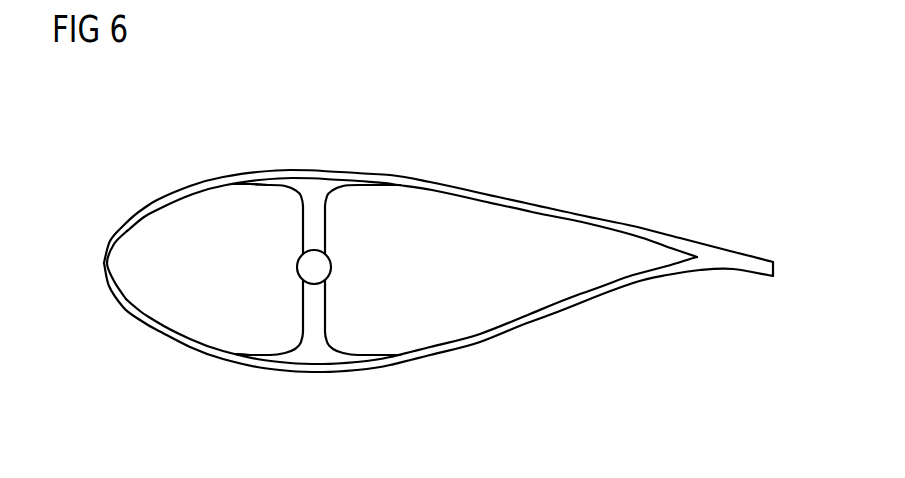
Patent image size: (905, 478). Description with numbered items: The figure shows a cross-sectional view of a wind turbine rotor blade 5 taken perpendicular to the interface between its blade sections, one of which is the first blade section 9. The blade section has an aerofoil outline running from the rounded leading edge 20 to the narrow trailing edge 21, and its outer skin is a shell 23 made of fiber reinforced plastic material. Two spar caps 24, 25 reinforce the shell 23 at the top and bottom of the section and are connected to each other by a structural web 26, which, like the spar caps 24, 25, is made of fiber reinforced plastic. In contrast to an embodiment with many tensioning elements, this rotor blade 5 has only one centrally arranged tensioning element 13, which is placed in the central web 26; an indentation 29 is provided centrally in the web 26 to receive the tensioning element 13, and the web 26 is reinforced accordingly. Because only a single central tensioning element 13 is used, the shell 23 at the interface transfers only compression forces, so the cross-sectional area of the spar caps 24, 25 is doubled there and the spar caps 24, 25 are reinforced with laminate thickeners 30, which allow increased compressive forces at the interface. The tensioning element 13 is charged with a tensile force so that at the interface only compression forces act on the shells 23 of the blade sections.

The rotor blade 5 is at (190, 121).
The first blade section 9 is at (641, 212).
The tensioning element 13 is at (308, 267).
The leading edge 20 is at (103, 266).
The trailing edge 21 is at (776, 268).
The shell 23 is at (416, 181).
The spar cap 24 is at (308, 181).
The spar cap 25 is at (316, 364).
The web 26 is at (312, 238).
The indentation 29 is at (314, 284).
The laminate thickener 30 is at (273, 184).